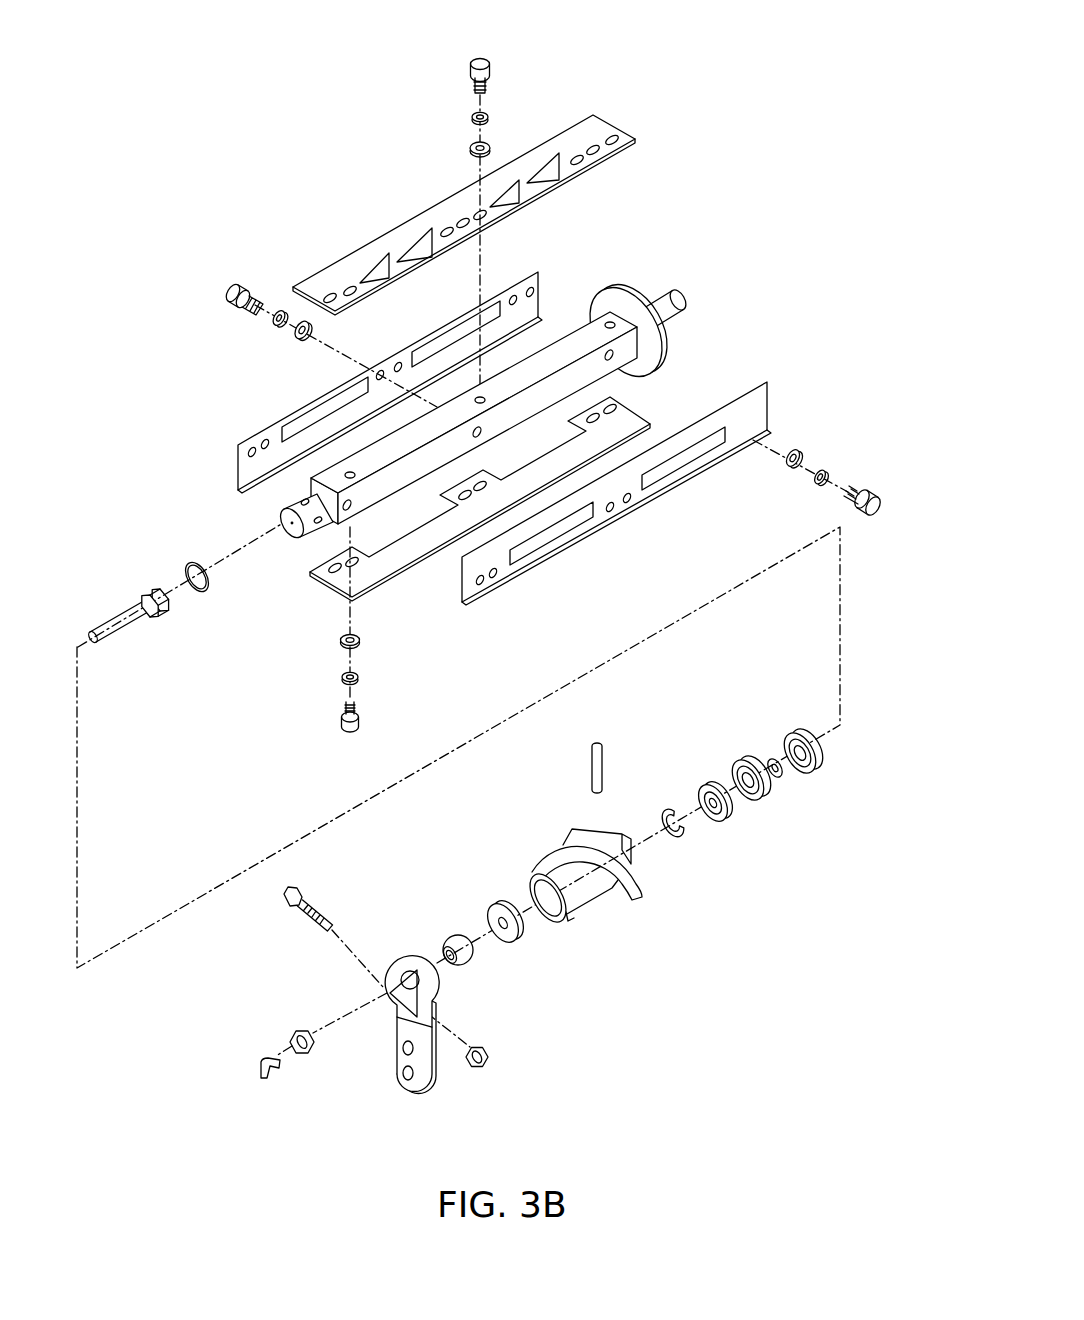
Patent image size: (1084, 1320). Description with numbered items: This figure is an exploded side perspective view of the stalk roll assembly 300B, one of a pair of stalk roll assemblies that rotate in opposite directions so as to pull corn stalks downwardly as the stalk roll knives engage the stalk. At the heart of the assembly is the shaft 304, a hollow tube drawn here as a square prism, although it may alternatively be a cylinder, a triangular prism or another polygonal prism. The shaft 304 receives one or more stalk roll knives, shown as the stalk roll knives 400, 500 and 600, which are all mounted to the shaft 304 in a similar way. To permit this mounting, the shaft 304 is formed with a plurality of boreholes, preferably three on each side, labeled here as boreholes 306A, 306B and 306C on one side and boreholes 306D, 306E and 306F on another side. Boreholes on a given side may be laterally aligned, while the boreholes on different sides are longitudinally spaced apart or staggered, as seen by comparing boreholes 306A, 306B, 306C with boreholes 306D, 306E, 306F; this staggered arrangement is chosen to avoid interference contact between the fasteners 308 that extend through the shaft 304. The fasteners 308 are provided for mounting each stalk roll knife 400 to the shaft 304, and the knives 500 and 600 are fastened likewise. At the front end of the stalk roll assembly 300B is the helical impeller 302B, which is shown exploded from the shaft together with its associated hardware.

The stalk roll assembly 300B is at (507, 66).
The stalk roll knife 500 is at (619, 131).
The shaft 304 is at (627, 291).
The borehole 306A is at (612, 319).
The borehole 306B is at (479, 397).
The borehole 306C is at (349, 472).
The borehole 306D is at (614, 352).
The borehole 306E is at (481, 433).
The borehole 306F is at (350, 507).
The stalk roll knife 400 is at (238, 444).
The fastener 308 is at (236, 301).
The stalk roll knife 600 is at (322, 589).
The helical impeller 302B is at (600, 846).